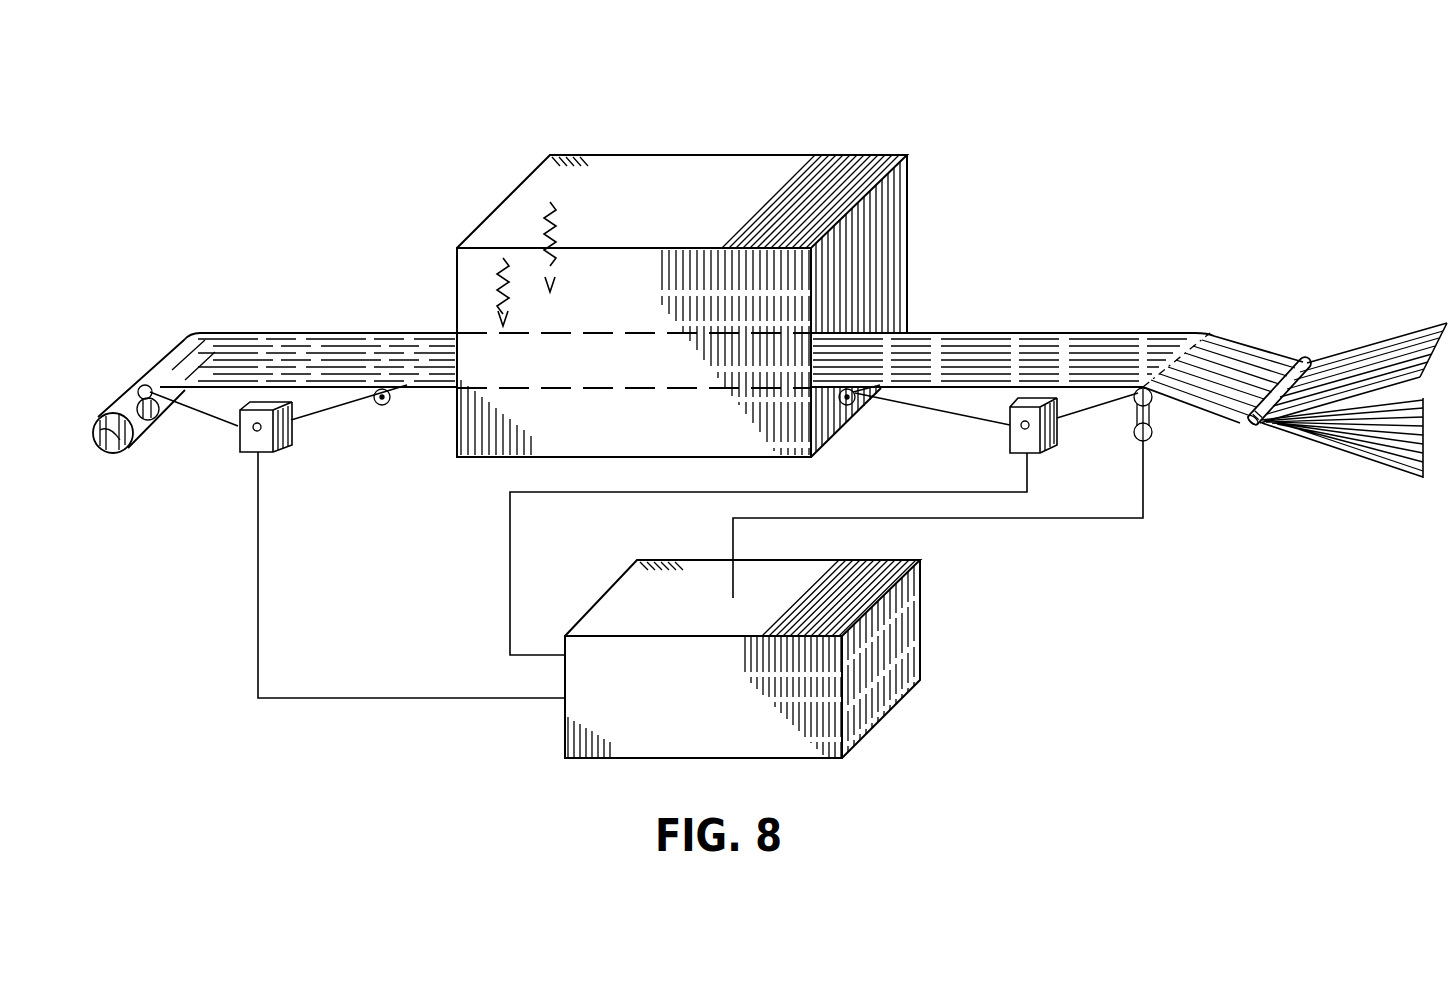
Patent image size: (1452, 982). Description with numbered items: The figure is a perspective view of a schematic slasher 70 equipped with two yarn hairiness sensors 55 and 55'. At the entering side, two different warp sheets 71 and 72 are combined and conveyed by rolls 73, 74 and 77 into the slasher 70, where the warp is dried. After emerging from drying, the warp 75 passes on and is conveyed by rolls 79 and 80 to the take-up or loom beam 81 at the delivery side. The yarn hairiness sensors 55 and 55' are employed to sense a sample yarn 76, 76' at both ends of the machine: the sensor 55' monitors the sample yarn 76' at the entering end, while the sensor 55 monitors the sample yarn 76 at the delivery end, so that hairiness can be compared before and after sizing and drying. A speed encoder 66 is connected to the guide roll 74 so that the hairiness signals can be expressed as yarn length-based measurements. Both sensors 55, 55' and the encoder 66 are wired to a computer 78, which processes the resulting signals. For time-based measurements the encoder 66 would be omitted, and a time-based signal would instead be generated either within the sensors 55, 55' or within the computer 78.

The slasher 70 is at (700, 207).
The warp 75 is at (376, 358).
The guide roll 74 is at (1208, 334).
The roll 73 is at (1304, 362).
The warp sheet 71 is at (1372, 366).
The warp sheet 72 is at (1378, 412).
The take-up or loom beam 81 is at (113, 430).
The roll 80 is at (143, 392).
The yarn hairiness sensor 55 is at (402, 550).
The sample yarn 76 is at (278, 439).
The roll 79 is at (388, 402).
The roll 77 is at (858, 403).
The sample yarn 76' is at (996, 428).
The yarn hairiness sensor 55' is at (796, 526).
The speed encoder 66 is at (1153, 428).
The computer 78 is at (651, 660).